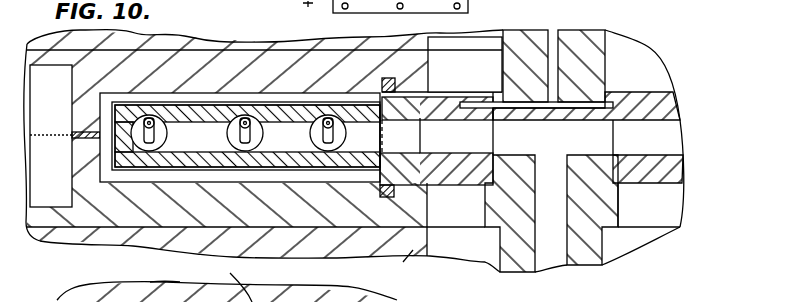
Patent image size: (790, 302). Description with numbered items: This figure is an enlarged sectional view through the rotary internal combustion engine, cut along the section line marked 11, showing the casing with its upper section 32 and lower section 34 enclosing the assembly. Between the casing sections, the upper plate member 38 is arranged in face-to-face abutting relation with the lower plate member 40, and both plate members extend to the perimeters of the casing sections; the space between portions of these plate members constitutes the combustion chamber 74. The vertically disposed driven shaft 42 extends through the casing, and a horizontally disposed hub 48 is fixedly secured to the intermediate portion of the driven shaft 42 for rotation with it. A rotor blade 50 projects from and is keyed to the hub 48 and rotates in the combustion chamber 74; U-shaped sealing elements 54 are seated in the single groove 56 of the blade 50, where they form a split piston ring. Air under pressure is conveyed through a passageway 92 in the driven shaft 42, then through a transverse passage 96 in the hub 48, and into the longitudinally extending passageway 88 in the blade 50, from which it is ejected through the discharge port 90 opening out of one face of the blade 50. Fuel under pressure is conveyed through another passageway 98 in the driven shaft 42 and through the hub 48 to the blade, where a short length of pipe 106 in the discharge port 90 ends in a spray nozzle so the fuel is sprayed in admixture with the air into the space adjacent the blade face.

The section line 11- 11 is at (245, 93).
The upper section 32 is at (193, 42).
The lower section 34 is at (101, 238).
The upper plate member 38 is at (72, 84).
The lower plate member 40 is at (78, 160).
The driven shaft 42 is at (585, 31).
The hub 48 is at (446, 96).
The rotor blade 50 is at (388, 88).
The sealing elements 54 is at (236, 301).
The groove 56 is at (175, 290).
The combustion chamber 74 is at (190, 90).
The passageway 88 is at (375, 152).
The discharge port 90 is at (236, 131).
The passageway 92 is at (552, 260).
The transverse passage 96 is at (470, 145).
The passageway 98 is at (552, 34).
The pipe 106 is at (318, 133).